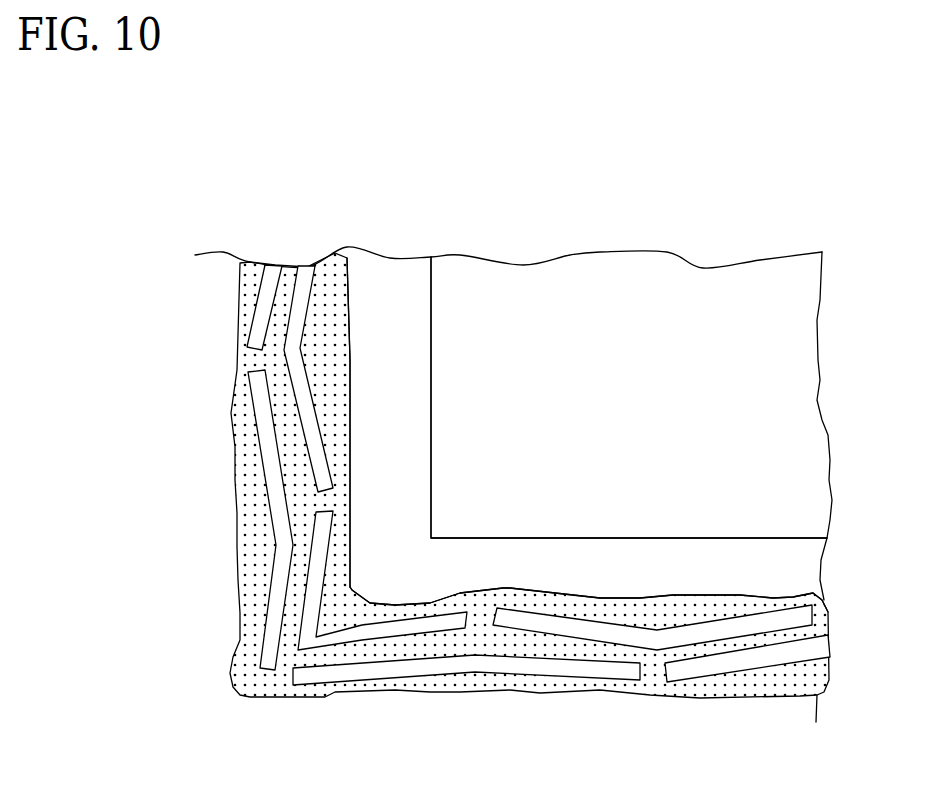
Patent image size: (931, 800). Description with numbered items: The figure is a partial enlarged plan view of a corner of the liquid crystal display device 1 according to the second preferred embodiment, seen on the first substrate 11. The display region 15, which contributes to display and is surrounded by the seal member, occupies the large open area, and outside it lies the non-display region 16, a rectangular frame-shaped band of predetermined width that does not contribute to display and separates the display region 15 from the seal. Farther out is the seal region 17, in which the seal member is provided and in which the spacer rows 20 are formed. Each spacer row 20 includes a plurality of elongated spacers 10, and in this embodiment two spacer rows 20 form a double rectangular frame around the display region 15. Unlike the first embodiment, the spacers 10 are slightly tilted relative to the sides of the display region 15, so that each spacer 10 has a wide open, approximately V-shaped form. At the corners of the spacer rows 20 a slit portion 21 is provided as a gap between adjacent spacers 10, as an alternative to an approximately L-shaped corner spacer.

The liquid crystal display device 1 is at (154, 176).
The spacer 10 is at (318, 468).
The first substrate 11 is at (226, 253).
The display region 15 is at (632, 268).
The non-display region 16 is at (398, 268).
The seal region 17 is at (334, 272).
The spacer row 20 is at (300, 436).
The slit portion 21 is at (653, 670).